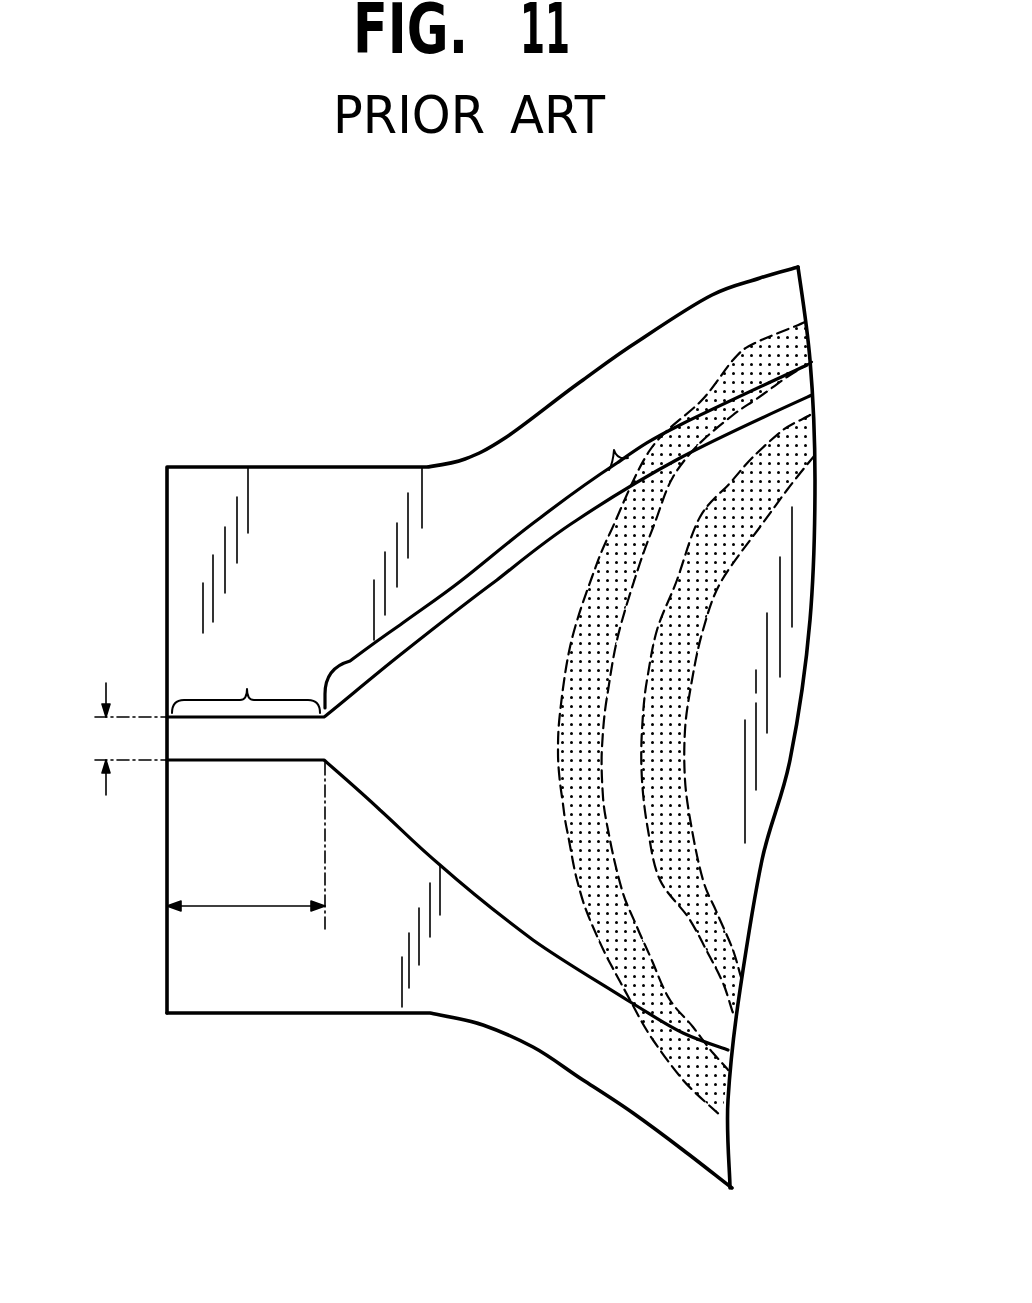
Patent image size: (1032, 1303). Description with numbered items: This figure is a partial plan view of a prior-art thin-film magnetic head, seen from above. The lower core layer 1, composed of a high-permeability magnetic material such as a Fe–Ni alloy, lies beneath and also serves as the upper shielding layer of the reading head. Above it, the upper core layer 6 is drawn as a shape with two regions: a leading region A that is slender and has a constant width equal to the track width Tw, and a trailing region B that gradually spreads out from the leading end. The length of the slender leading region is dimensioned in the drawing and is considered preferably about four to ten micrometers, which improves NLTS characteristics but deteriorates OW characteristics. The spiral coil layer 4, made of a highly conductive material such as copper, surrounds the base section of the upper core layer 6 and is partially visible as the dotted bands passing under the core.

The lower core layer 1 is at (290, 505).
The coil layer 4 is at (765, 343).
The upper core layer 6 is at (778, 703).